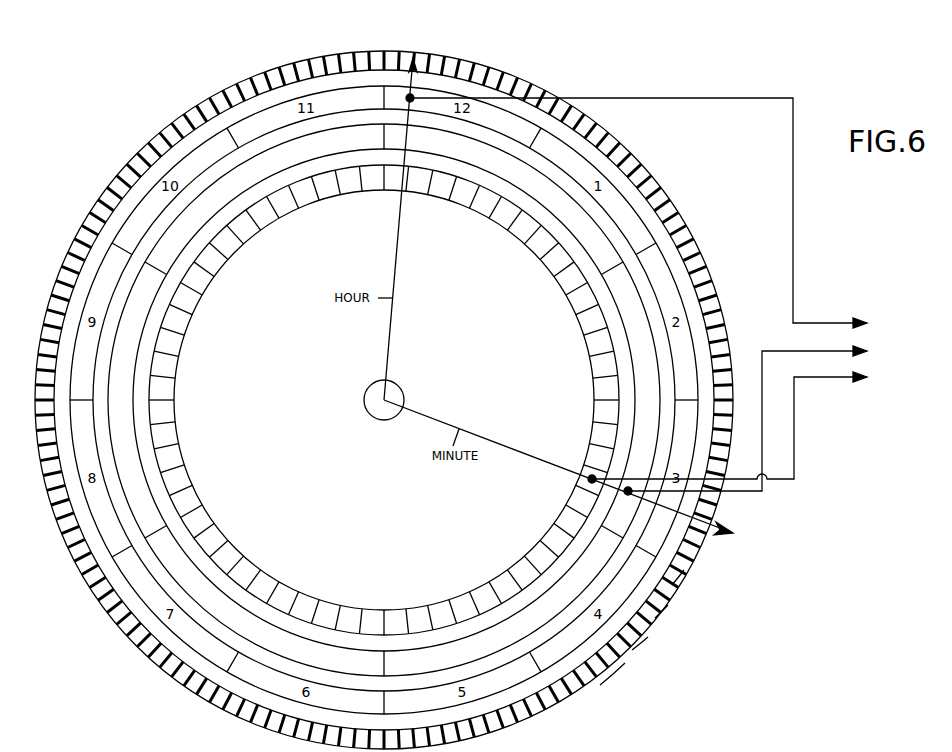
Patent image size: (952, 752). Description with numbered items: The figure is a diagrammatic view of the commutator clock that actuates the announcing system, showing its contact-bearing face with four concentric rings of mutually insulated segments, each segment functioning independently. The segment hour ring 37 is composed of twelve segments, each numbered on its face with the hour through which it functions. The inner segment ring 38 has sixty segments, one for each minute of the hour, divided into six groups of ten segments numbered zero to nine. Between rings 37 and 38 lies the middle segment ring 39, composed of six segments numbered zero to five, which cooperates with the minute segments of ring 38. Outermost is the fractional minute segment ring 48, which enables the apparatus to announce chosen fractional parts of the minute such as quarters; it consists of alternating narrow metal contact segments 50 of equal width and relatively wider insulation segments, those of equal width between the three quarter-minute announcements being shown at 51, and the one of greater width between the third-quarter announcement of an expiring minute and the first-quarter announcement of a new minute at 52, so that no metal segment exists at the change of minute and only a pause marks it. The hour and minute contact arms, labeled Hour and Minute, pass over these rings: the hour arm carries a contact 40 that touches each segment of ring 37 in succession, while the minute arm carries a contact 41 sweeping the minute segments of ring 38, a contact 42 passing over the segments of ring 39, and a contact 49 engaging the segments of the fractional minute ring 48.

The segment hour ring 37 is at (145, 140).
The inner segment ring 38 is at (233, 245).
The middle segment ring 39 is at (578, 217).
The contact 40 is at (410, 98).
The contact 41 is at (592, 479).
The contact 42 is at (628, 491).
The fractional minute segment ring 48 is at (642, 642).
The contact 49 is at (707, 523).
The metal contact segments 50 is at (682, 597).
The insulation segments 51 is at (665, 629).
The insulation segment 52 is at (610, 690).